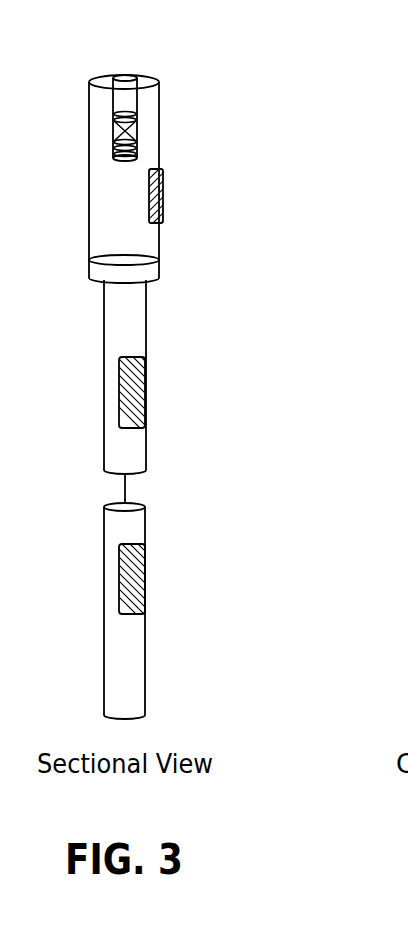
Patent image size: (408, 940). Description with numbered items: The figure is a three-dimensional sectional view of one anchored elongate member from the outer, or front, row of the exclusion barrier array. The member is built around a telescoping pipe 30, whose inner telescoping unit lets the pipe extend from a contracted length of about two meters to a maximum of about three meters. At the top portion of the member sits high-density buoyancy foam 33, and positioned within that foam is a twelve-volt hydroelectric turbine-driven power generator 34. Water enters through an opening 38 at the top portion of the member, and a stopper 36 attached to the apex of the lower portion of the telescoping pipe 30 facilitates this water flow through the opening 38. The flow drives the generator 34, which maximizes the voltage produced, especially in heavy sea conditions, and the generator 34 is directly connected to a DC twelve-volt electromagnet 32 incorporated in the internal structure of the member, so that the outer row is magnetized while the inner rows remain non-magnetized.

The telescoping pipe 30 is at (101, 358).
The electromagnet 32 is at (166, 196).
The high-density buoyancy foam 33 is at (147, 117).
The hydroelectric turbine-driven power generator 34 is at (112, 137).
The stopper 36 is at (136, 272).
The opening 38 is at (125, 73).